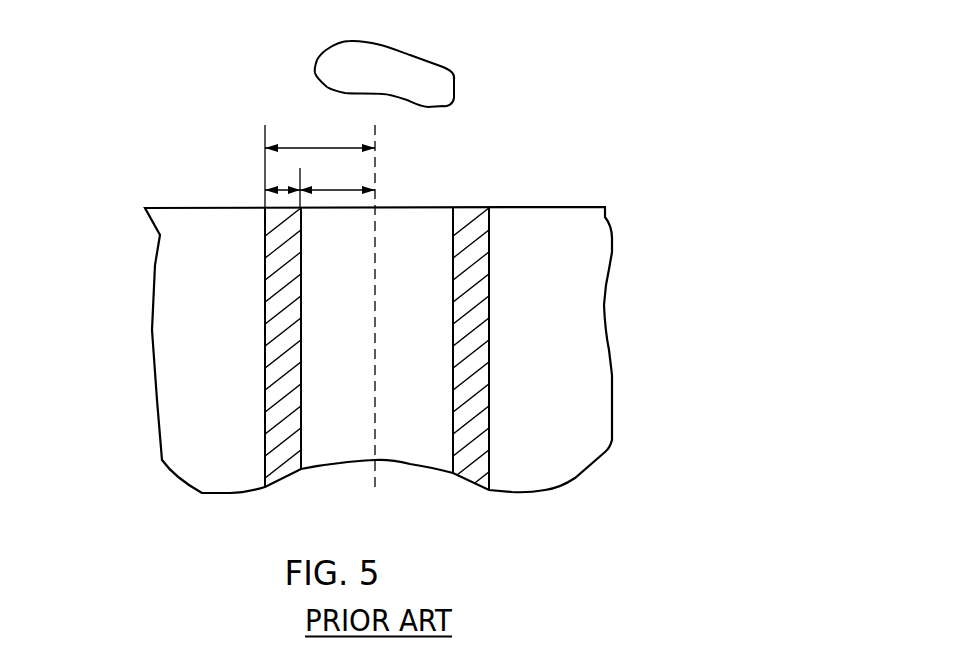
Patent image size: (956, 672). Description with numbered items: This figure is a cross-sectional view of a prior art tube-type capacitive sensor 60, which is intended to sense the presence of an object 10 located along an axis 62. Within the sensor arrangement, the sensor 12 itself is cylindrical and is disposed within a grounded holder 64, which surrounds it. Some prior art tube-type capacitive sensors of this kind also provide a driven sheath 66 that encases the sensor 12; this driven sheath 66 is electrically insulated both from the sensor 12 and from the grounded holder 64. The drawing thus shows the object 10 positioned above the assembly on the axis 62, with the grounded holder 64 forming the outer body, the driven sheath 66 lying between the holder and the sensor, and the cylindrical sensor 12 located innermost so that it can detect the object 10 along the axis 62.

The object 10 is at (355, 51).
The tube-type capacitive sensor 60 is at (126, 169).
The axis 62 is at (375, 208).
The sensor 12 is at (430, 227).
The grounded holder 64 is at (572, 338).
The driven sheath 66 is at (482, 240).